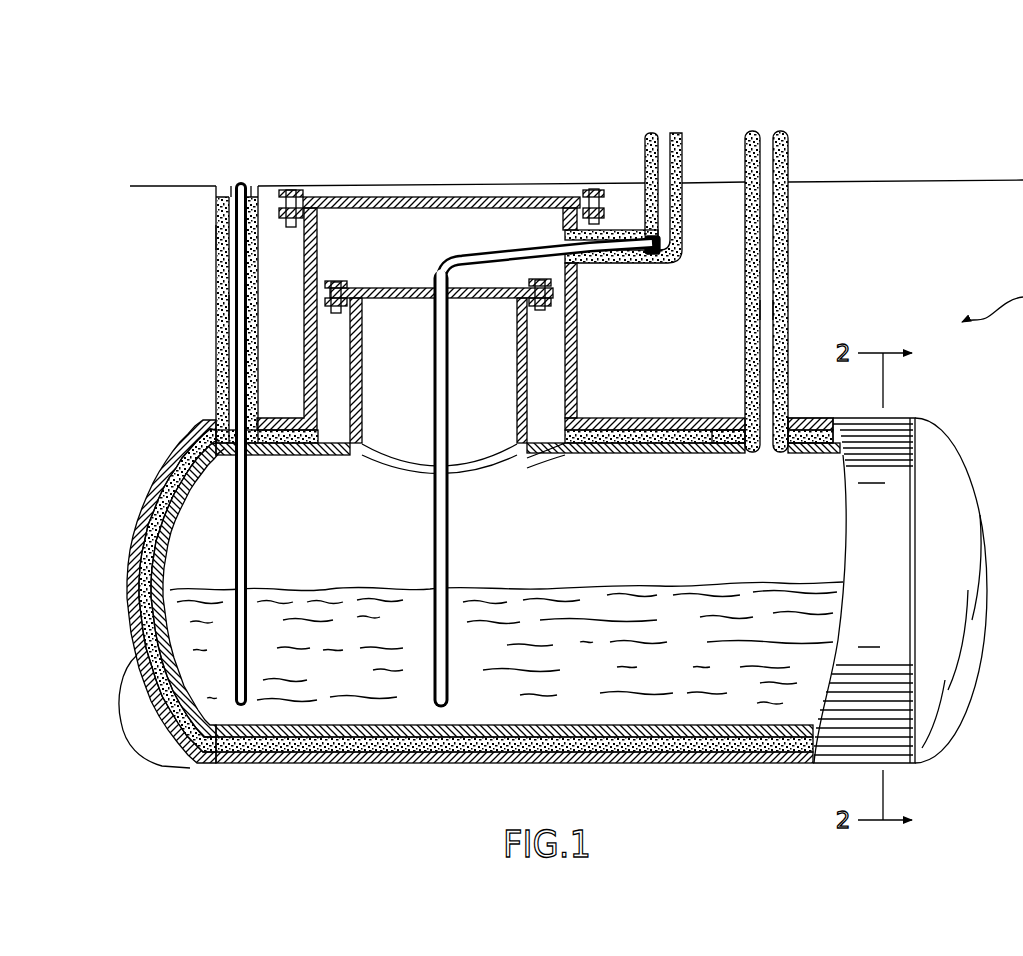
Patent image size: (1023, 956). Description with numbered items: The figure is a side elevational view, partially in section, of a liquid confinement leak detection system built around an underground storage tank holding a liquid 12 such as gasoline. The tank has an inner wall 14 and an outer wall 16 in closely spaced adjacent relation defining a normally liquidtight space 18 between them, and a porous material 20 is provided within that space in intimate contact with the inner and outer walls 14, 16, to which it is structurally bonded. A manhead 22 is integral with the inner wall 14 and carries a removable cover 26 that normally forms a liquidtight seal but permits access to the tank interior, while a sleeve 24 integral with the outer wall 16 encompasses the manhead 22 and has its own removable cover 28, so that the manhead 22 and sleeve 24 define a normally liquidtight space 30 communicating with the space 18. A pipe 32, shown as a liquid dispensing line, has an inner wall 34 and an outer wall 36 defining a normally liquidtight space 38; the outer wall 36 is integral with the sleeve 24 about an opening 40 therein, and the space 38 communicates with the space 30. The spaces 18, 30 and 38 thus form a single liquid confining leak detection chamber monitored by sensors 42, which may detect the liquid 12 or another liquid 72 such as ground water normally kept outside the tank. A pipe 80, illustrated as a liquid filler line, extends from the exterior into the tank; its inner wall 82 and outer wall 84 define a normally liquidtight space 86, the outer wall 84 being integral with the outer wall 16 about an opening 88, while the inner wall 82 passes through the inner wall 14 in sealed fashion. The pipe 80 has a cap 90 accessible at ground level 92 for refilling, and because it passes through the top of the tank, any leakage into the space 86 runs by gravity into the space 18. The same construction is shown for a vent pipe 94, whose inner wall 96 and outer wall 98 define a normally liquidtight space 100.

The liquid 12 is at (655, 586).
The inner wall 14 is at (657, 455).
The outer wall 16 is at (648, 420).
The normally liquidtight space 18 is at (718, 418).
The porous material 20 is at (588, 455).
The manhead 22 is at (530, 375).
The sleeve 24 is at (577, 398).
The removable cover 26 is at (390, 288).
The removable cover 28 is at (405, 197).
The normally liquidtight space 30 is at (548, 335).
The pipe 32 is at (644, 173).
The inner wall 34 is at (685, 213).
The outer wall 36 is at (685, 150).
The normally liquidtight space 38 is at (622, 229).
The opening 40 is at (555, 262).
The sensors 42 is at (805, 428).
The liquid 72 is at (155, 728).
The pipe 80 is at (195, 314).
The inner wall 82 is at (216, 236).
The outer wall 84 is at (216, 272).
The normally liquidtight space 86 is at (216, 305).
The opening 88 is at (222, 455).
The cap 90 is at (240, 188).
The ground level 92 is at (178, 186).
The vent pipe 94 is at (836, 291).
The inner wall 96 is at (790, 262).
The outer wall 98 is at (790, 305).
The normally liquidtight space 100 is at (795, 197).